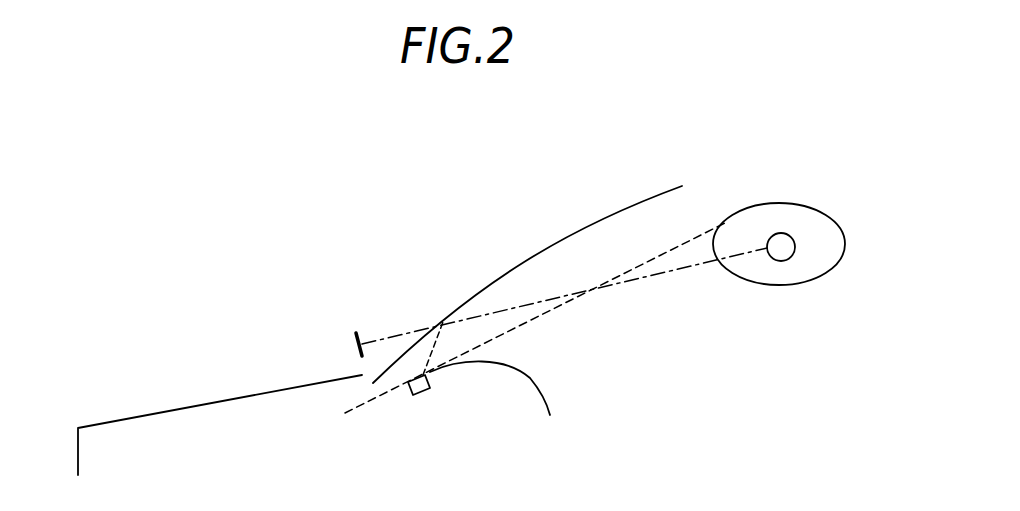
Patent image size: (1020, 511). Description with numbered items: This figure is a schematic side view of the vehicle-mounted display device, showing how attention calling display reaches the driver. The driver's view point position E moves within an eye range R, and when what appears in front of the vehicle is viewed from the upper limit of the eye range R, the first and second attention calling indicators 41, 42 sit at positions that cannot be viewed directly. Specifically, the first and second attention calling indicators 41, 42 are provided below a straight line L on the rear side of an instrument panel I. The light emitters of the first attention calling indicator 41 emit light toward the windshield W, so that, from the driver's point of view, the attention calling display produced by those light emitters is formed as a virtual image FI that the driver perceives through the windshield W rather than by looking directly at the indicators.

The windshield W is at (560, 242).
The virtual image FI is at (357, 338).
The straight line L is at (697, 234).
The eye range R is at (808, 205).
The view point position E is at (792, 257).
The instrument panel I is at (543, 395).
The first attention calling indicator 41 is at (428, 427).
The second attention calling indicator 42 is at (417, 395).